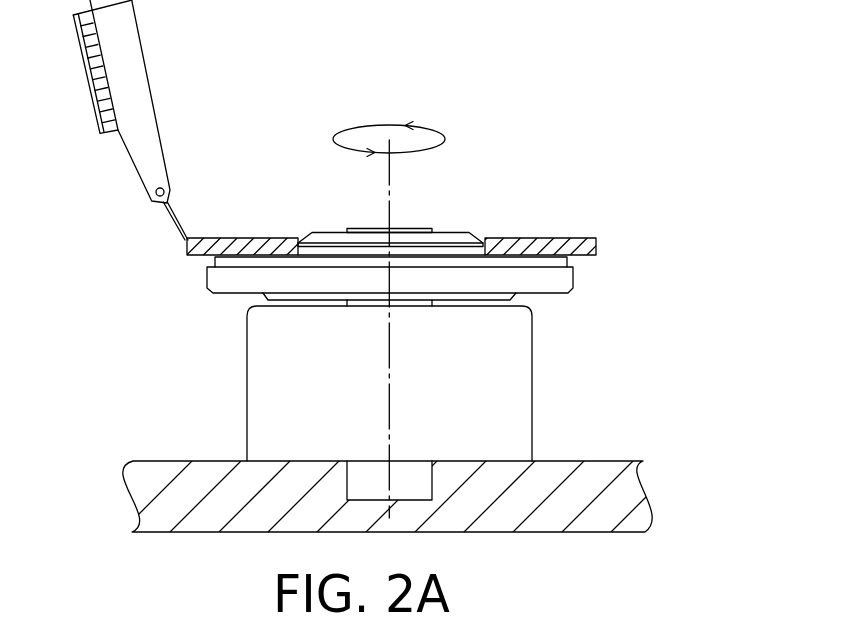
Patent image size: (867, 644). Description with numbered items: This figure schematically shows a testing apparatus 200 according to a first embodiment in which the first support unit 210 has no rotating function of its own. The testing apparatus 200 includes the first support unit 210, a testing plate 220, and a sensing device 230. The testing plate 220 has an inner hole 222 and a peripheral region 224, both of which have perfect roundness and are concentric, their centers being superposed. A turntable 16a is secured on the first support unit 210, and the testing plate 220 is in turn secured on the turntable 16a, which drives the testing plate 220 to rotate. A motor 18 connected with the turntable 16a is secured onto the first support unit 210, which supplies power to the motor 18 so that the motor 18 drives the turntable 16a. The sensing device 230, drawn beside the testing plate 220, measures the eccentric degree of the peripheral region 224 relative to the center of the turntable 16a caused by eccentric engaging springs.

The testing apparatus 200 is at (585, 108).
The sensing device 230 is at (148, 160).
The peripheral region 224 is at (597, 248).
The turntable 16a is at (447, 243).
The inner hole 222 is at (297, 241).
The testing plate 220 is at (580, 239).
The motor 18 is at (517, 390).
The first support unit 210 is at (613, 495).